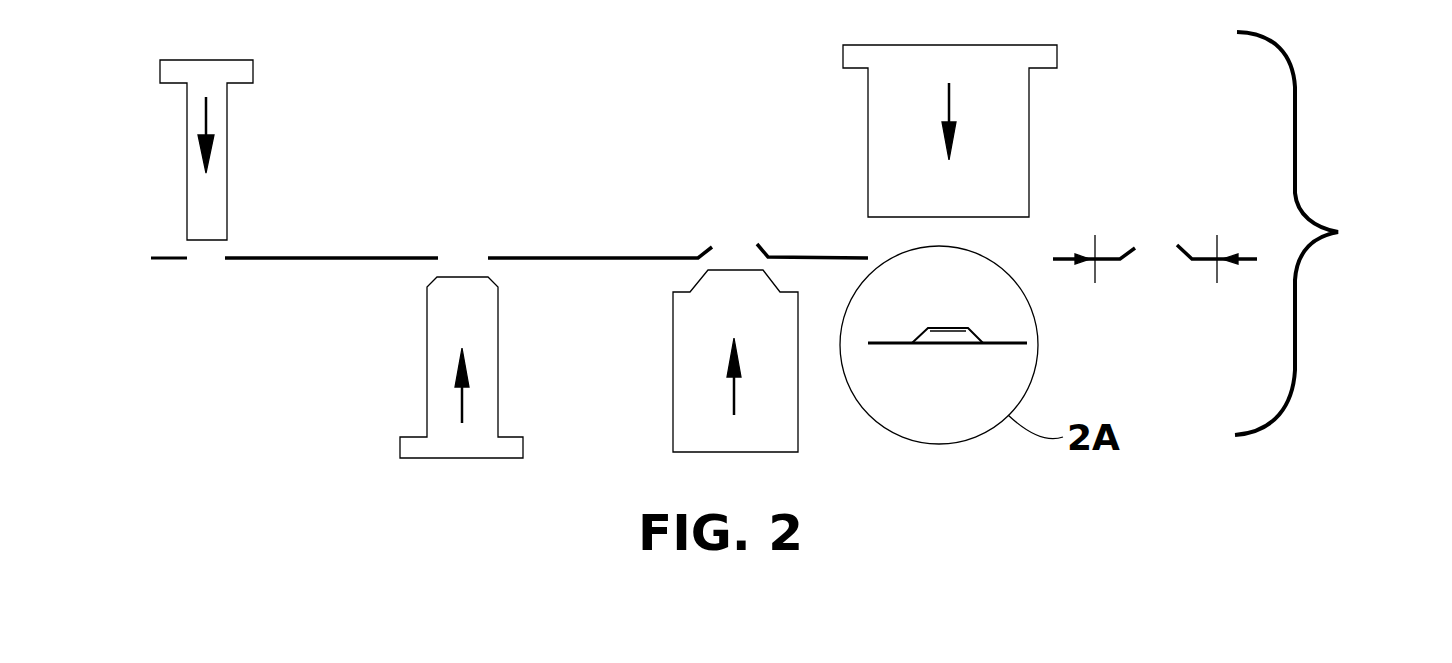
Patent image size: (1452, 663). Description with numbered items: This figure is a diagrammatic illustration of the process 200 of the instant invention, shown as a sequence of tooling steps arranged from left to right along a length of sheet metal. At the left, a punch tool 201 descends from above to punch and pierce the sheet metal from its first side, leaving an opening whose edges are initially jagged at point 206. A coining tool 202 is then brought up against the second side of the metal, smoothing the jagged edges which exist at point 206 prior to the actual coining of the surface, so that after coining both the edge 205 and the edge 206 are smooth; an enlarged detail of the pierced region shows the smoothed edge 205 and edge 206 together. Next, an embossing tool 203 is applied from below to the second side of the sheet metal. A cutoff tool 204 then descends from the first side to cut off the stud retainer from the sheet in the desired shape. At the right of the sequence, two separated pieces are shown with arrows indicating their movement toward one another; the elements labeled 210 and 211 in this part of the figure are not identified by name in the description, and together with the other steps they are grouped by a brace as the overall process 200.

The process 200 is at (1323, 233).
The punch tool 201 is at (206, 118).
The coining tool 202 is at (463, 408).
The embossing tool 203 is at (734, 398).
The cutoff tool 204 is at (949, 105).
The edge 205 is at (225, 258).
The point (edge) 206 is at (437, 259).
The mask 210 is at (1097, 248).
The substrate segment 211 is at (1063, 260).